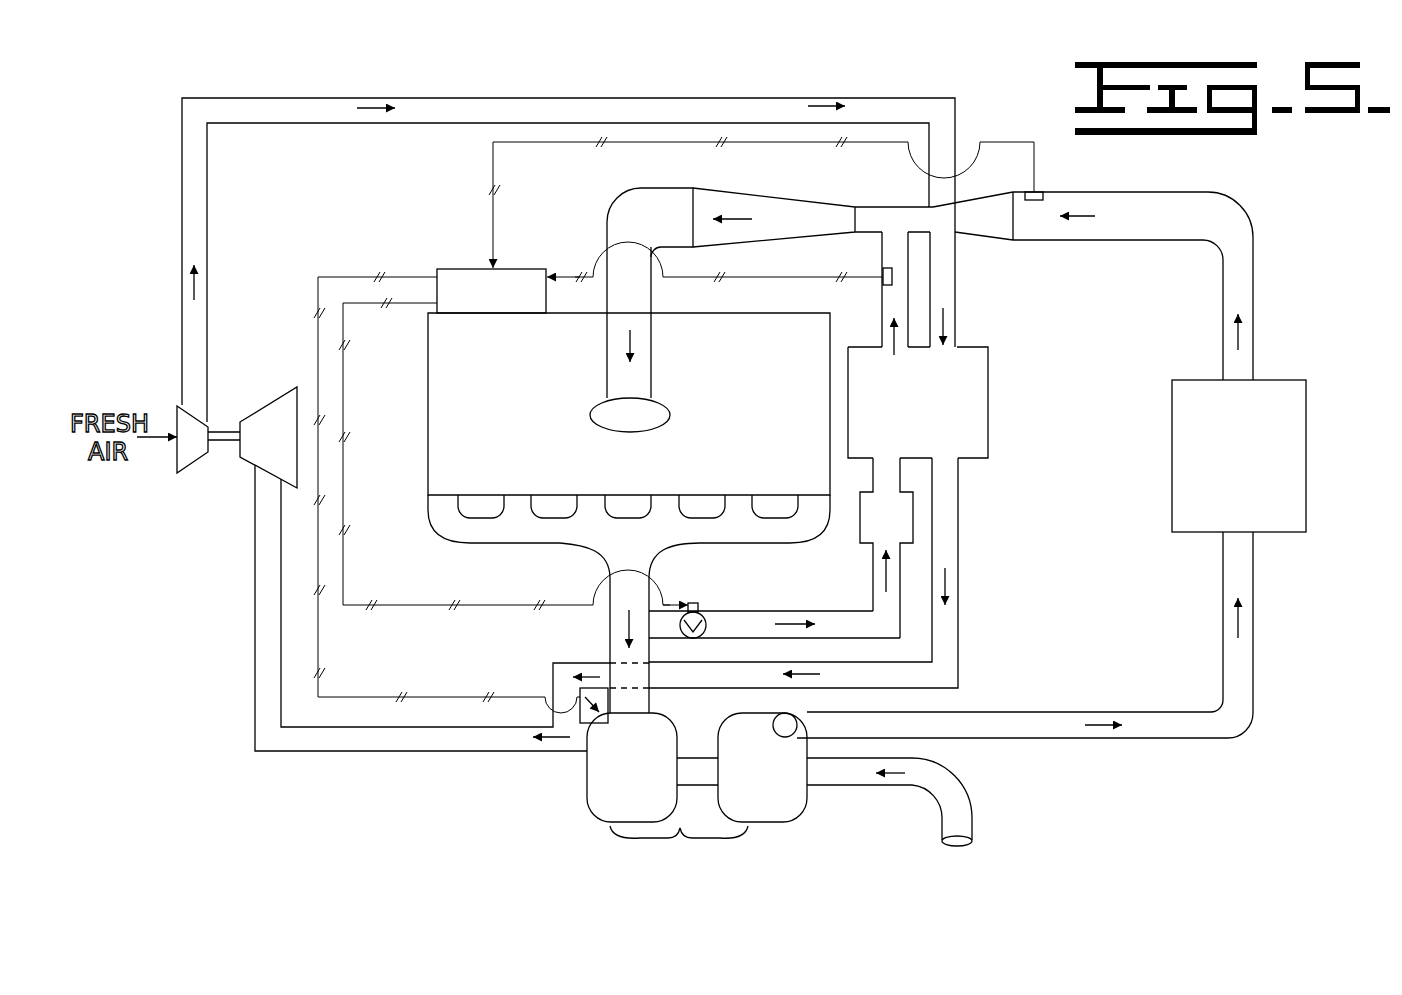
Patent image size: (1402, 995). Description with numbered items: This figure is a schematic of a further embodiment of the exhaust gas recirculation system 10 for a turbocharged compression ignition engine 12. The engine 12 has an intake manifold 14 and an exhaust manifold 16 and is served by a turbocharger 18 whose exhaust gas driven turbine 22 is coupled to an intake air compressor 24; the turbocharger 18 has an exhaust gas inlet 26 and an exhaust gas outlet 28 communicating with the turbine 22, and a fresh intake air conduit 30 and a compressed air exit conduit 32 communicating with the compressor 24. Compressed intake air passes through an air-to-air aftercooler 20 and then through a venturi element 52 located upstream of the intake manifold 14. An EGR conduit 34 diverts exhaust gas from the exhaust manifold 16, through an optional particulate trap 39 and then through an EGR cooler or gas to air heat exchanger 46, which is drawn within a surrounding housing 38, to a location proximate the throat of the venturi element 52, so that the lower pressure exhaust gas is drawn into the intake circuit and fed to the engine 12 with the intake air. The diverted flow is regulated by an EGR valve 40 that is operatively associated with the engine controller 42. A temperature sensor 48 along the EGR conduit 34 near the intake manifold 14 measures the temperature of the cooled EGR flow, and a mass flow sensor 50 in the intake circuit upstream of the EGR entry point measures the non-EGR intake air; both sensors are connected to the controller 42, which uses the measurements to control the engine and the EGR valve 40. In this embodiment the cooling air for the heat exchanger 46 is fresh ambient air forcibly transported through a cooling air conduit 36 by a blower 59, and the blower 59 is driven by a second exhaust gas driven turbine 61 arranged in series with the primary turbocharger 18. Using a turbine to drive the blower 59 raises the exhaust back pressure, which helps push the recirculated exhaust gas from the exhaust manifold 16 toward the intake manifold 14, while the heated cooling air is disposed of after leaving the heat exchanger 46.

The exhaust gas recirculation (EGR) system 10 is at (366, 232).
The turbocharged compression ignition engine 12 is at (472, 433).
The intake manifold 14 is at (648, 418).
The exhaust manifold 16 is at (620, 550).
The turbocharger 18 is at (668, 841).
The air-to-air aftercooler 20 is at (1295, 486).
The exhaust gas driven turbine 22 is at (610, 808).
The intake air compressor 24 is at (765, 797).
The exhaust gas inlet 26 is at (650, 698).
The exhaust gas outlet 28 is at (497, 752).
The fresh intake air conduit 30 is at (963, 770).
The compressed air exit conduit 32 is at (1058, 740).
The EGR conduit 34 is at (756, 611).
The cooling air conduit 36 is at (958, 645).
The valve body 38 is at (988, 400).
The particulate trap 39 is at (857, 523).
The EGR valve 40 is at (713, 614).
The engine controller 42 is at (437, 308).
The EGR cooler or gas to air heat exchanger 46 is at (931, 410).
The temperature sensor 48 is at (892, 274).
The mass flow sensor 50 is at (1040, 190).
The venturi element 52 is at (882, 217).
The blower 59 is at (183, 462).
The second exhaust gas driven turbine 61 is at (265, 408).